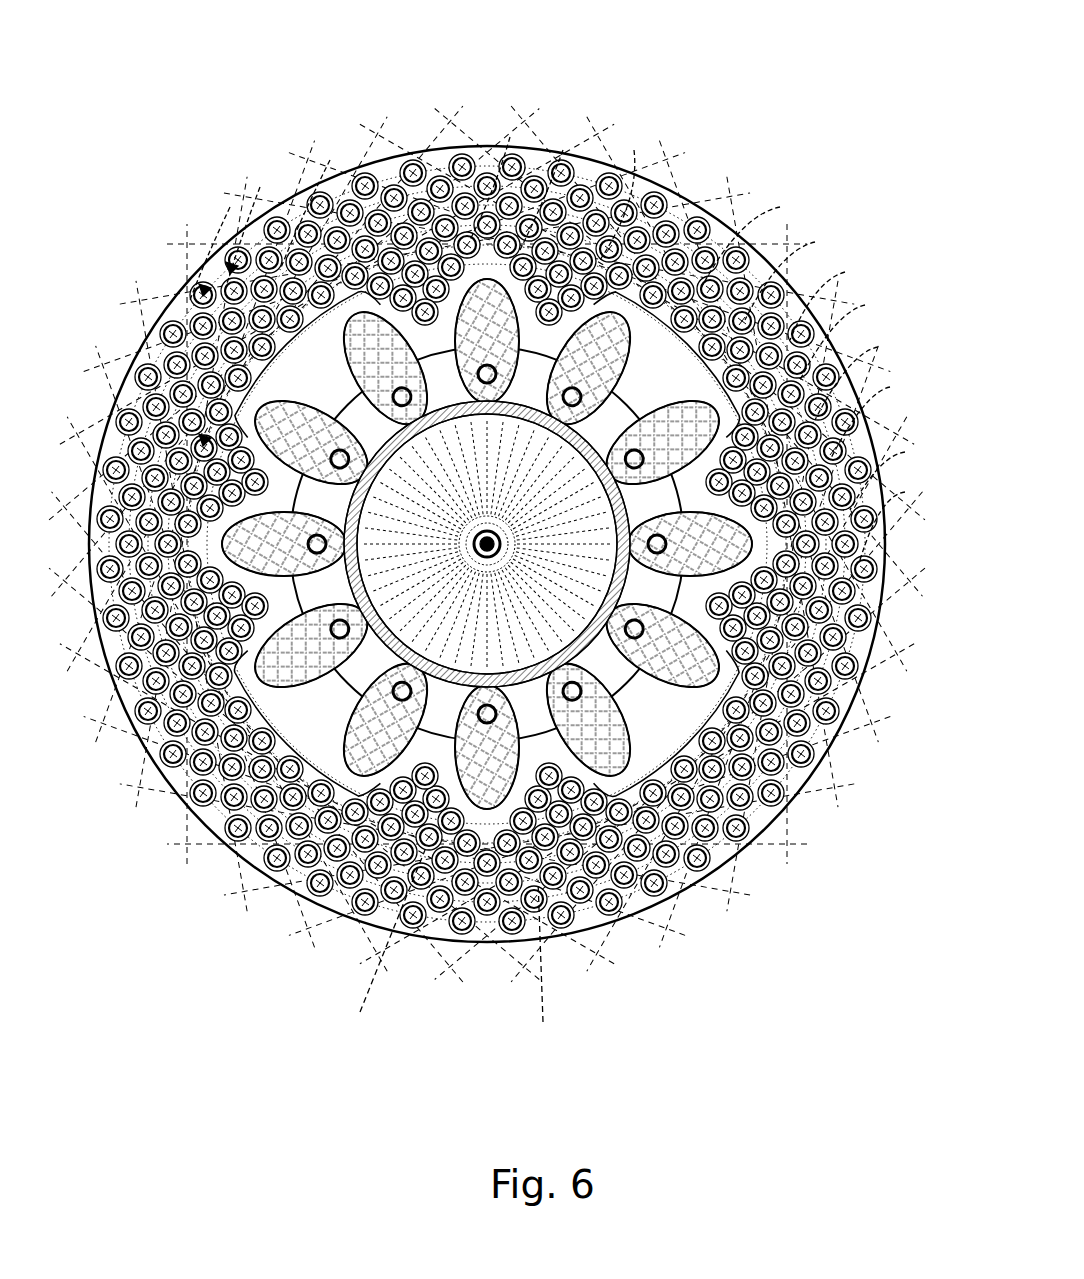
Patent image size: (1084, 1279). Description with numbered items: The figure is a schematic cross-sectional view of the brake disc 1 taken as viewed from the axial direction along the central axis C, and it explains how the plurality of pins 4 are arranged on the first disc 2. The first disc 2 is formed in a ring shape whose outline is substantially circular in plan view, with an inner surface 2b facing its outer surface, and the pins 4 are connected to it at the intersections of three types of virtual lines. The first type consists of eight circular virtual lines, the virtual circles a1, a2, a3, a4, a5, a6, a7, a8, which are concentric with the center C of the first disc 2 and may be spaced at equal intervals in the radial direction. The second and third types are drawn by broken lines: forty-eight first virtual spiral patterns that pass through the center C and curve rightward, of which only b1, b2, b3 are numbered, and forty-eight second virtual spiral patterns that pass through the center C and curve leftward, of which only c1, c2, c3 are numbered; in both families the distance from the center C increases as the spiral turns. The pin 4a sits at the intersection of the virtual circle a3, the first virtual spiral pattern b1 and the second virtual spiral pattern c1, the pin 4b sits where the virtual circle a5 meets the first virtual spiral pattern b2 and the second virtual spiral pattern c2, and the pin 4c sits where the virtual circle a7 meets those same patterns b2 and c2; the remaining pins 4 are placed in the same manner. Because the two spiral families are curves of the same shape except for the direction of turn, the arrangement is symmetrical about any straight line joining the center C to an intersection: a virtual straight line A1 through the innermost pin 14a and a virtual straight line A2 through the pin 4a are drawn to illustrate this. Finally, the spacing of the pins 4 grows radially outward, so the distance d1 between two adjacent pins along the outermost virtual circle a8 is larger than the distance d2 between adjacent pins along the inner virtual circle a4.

The brake disc 1 is at (487, 500).
The first disc 2 is at (798, 803).
The inner surface 2b is at (768, 825).
The pins 4 is at (708, 868).
The pin 4a is at (508, 152).
The pin 4b is at (462, 152).
The pin 4c is at (410, 158).
The innermost pin 14a is at (655, 250).
The virtual circle a1 is at (780, 207).
The virtual circle a2 is at (815, 242).
The virtual circle a3 is at (845, 272).
The virtual circle a4 is at (865, 305).
The virtual circle a5 is at (878, 347).
The virtual circle a6 is at (890, 387).
The virtual circle a7 is at (905, 452).
The virtual circle a8 is at (905, 492).
The first virtual spiral pattern b1 is at (634, 150).
The first virtual spiral pattern b2 is at (563, 150).
The first virtual spiral pattern b3 is at (510, 137).
The second virtual spiral pattern c1 is at (230, 207).
The second virtual spiral pattern c2 is at (260, 187).
The second virtual spiral pattern c3 is at (330, 160).
The distance d1 is at (230, 266).
The distance d2 is at (203, 440).
The virtual straight line A1 is at (358, 1000).
The virtual straight line A2 is at (548, 1012).
The center C is at (516, 543).